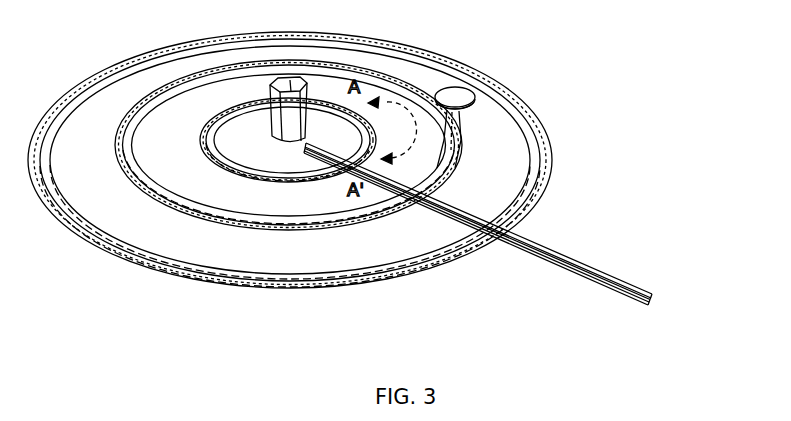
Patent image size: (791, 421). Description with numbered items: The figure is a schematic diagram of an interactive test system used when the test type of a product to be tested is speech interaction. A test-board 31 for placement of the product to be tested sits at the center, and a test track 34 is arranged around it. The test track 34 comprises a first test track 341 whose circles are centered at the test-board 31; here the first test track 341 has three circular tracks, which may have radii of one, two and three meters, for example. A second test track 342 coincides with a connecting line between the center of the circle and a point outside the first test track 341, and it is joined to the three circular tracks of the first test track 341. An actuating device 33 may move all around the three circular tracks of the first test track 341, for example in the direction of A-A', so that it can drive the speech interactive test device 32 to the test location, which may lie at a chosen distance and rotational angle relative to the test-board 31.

The test-board 31 is at (292, 80).
The speech interactive test device 32 is at (452, 97).
The actuating device 33 is at (452, 137).
The test track 34 is at (539, 224).
The first test track 341 is at (496, 243).
The second test track 342 is at (577, 273).